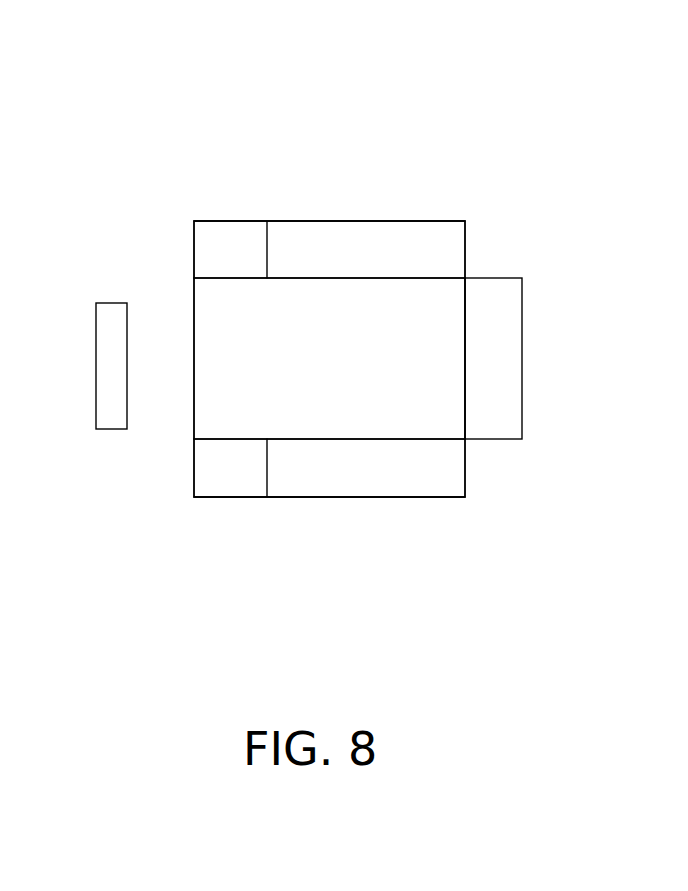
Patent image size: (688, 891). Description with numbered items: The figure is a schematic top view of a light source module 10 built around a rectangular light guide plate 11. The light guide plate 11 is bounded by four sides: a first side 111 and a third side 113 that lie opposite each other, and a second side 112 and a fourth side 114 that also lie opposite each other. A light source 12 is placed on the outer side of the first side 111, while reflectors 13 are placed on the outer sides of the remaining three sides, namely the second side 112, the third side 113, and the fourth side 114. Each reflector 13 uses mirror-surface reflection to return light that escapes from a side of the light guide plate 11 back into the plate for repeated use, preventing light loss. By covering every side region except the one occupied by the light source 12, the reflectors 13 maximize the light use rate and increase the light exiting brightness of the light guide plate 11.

The light source module 10 is at (148, 86).
The light guide plate 11 is at (222, 320).
The first side 111 is at (193, 393).
The second side 112 is at (267, 497).
The third side 113 is at (465, 393).
The fourth side 114 is at (268, 221).
The light source 12 is at (106, 398).
The reflector 13 is at (358, 227).